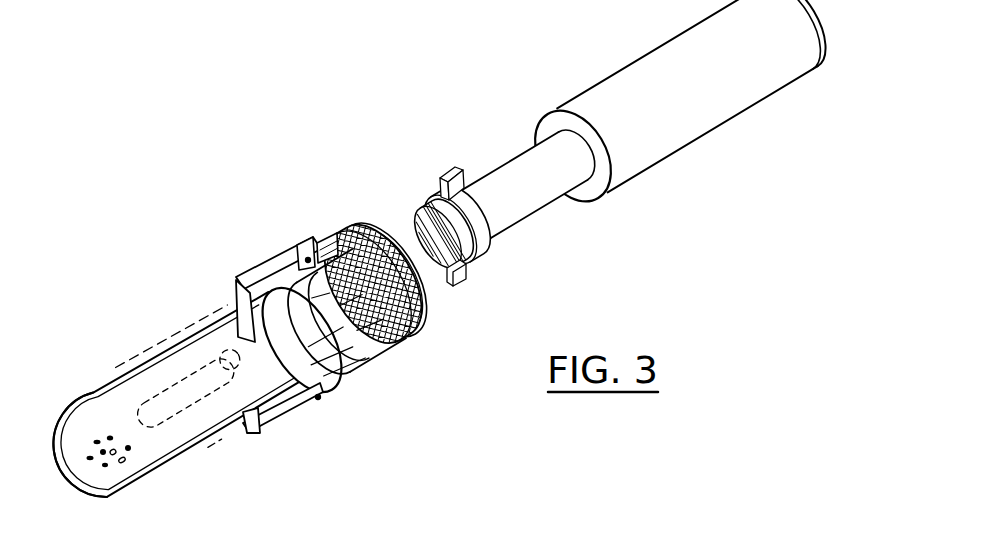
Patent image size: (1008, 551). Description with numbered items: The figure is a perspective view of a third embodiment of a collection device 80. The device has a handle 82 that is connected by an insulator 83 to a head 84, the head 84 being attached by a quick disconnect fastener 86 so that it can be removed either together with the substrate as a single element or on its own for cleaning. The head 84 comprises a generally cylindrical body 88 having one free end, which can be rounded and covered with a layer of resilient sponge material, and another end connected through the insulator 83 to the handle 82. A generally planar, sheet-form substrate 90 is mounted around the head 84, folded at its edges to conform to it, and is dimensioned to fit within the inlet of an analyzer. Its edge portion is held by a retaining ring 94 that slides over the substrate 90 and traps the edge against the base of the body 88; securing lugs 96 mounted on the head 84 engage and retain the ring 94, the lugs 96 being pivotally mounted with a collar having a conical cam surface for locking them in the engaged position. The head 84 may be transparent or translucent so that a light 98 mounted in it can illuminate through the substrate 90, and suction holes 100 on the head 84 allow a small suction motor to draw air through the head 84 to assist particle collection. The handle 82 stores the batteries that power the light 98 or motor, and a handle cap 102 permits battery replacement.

The collection device 80 is at (354, 144).
The handle 82 is at (717, 107).
The insulator 83 is at (418, 207).
The head 84 is at (302, 243).
The quick disconnect fastener 86 is at (472, 218).
The generally cylindrical body 88 is at (163, 353).
The substrate 90 is at (138, 485).
The retaining ring 94 is at (312, 358).
The securing lugs 96 is at (262, 268).
The light 98 is at (197, 397).
The suction holes 100 is at (103, 463).
The handle cap 102 is at (813, 62).